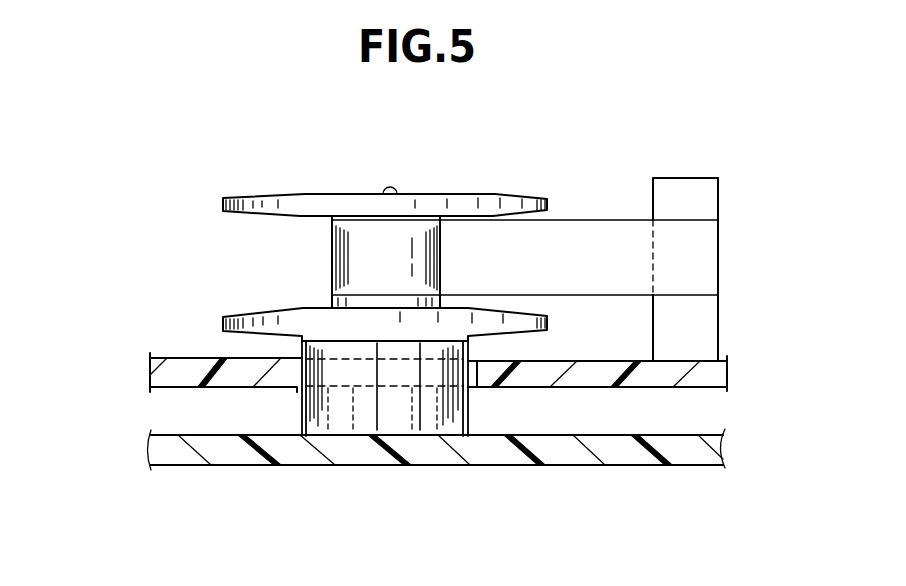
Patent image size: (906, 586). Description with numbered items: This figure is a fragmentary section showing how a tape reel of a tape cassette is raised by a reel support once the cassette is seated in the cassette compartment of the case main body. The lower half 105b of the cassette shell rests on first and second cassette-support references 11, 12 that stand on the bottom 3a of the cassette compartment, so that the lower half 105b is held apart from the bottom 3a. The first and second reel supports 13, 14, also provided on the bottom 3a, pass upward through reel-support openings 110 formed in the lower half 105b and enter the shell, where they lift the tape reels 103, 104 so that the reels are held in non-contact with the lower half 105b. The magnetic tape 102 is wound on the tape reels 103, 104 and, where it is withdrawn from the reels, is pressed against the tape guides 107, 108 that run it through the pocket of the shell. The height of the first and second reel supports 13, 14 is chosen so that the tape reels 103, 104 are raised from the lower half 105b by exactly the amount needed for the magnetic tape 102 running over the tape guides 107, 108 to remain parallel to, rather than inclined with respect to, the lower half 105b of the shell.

The tape reel 103 is at (385, 165).
The tape reel 104 is at (329, 187).
The magnetic tape 102 is at (568, 227).
The tape guide 107 is at (692, 242).
The tape guide 108 is at (677, 192).
The lower half of the shell 105b is at (185, 357).
The reel-support opening 110 is at (293, 389).
The bottom of the cassette compartment 3a is at (212, 455).
The first reel support 13 is at (350, 438).
The second reel support 14 is at (302, 413).
The first cassette-support reference 11 is at (384, 452).
The second cassette-support reference 12 is at (340, 425).